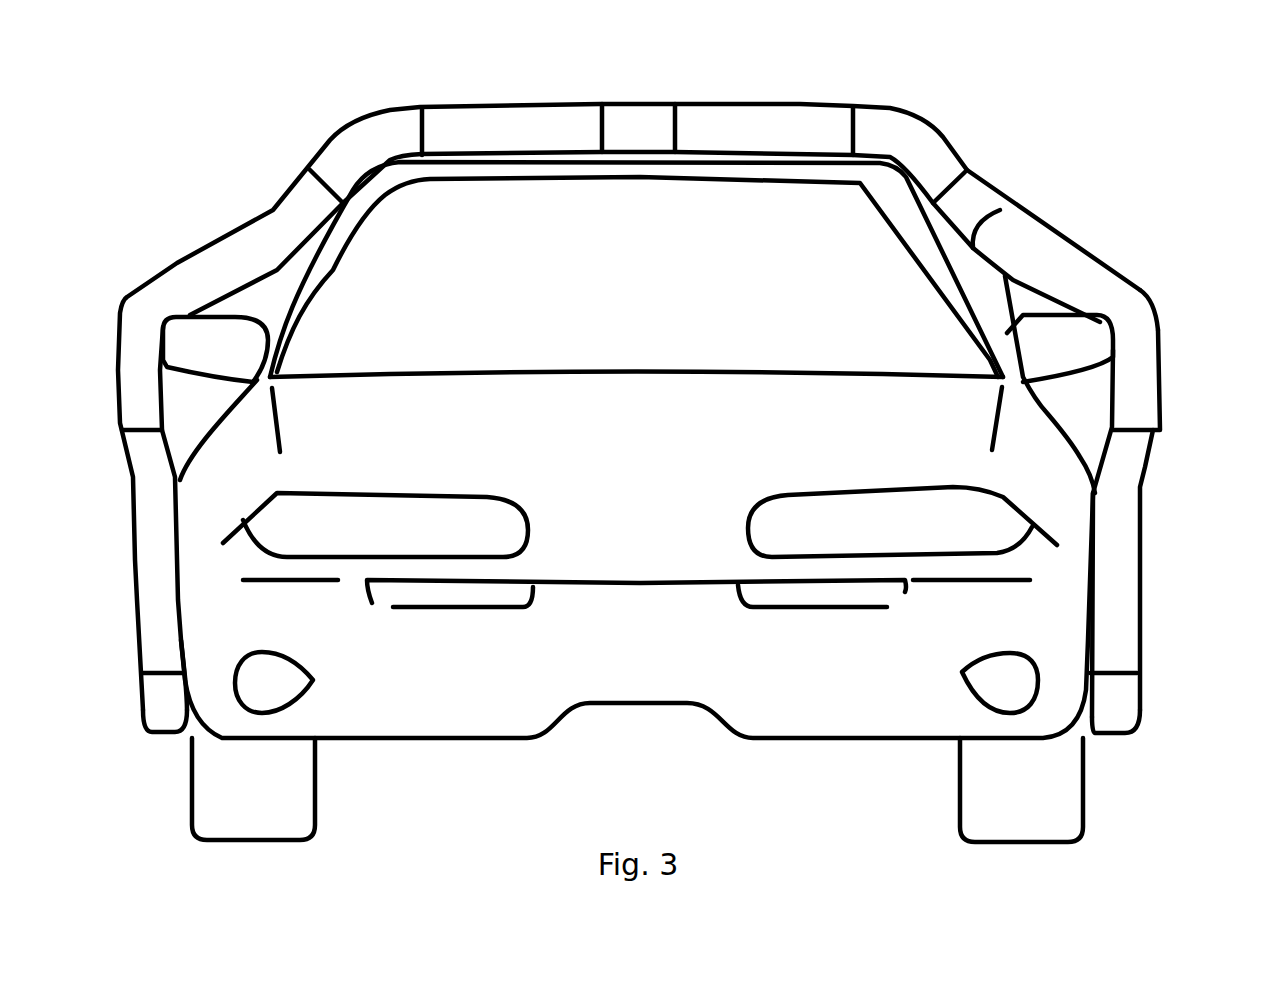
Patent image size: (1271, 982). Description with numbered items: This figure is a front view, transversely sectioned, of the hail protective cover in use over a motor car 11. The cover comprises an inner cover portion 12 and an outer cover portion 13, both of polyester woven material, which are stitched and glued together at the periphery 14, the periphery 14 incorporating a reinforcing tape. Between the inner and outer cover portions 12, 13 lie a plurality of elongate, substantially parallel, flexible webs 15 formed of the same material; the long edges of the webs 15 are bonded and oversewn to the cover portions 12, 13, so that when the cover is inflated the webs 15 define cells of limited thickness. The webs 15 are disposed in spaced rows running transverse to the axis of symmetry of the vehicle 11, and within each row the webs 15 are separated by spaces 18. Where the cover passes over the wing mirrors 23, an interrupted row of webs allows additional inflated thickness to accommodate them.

The motor car 11 is at (455, 703).
The inner cover portion 12 is at (1013, 212).
The outer cover portion 13 is at (1063, 240).
The periphery 14 is at (1113, 737).
The flexible webs 15 is at (357, 153).
The spaces 18 is at (508, 132).
The wing mirrors 23 is at (1145, 298).